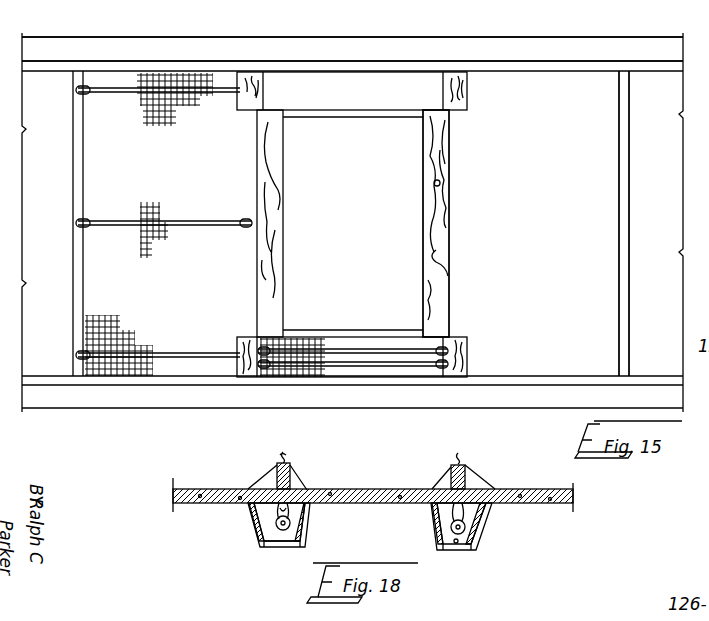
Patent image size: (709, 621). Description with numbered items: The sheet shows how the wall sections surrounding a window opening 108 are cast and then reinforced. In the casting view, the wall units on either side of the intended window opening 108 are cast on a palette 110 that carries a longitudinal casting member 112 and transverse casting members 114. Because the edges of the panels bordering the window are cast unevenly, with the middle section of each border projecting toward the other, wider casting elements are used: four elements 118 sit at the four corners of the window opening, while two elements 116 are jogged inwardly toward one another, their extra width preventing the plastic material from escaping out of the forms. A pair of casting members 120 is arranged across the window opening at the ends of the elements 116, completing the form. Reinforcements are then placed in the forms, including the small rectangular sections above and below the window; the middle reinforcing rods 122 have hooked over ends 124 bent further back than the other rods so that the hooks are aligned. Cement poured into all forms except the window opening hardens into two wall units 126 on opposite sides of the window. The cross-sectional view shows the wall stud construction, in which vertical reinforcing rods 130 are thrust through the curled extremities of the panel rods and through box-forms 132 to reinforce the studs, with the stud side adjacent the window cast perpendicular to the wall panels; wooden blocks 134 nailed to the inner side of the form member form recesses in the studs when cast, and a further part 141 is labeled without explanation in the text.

In FIG. 15, the window opening 108 is at (450, 265).
In FIG. 15, the palette 110 is at (194, 47).
In FIG. 15, the longitudinal casting member 112 is at (368, 66).
In FIG. 15, the transverse casting member 114 is at (75, 258).
In FIG. 15, the wider casting element 116 is at (282, 194).
In FIG. 15, the wider casting element 118 is at (266, 98).
In FIG. 15, the casting member 120 is at (374, 115).
In FIG. 15, the middle reinforcing rod 122 is at (198, 222).
In FIG. 15, the hooked over end 124 is at (245, 225).
In FIG. 15, the wall unit 126 is at (601, 183).
In FIG. 18, the vertical reinforcing rod 130 is at (468, 546).
In FIG. 18, the box-form 132 is at (458, 546).
In FIG. 18, the wooden block 134 is at (270, 518).
In FIG. 18, the bracket bottom 141 is at (288, 535).